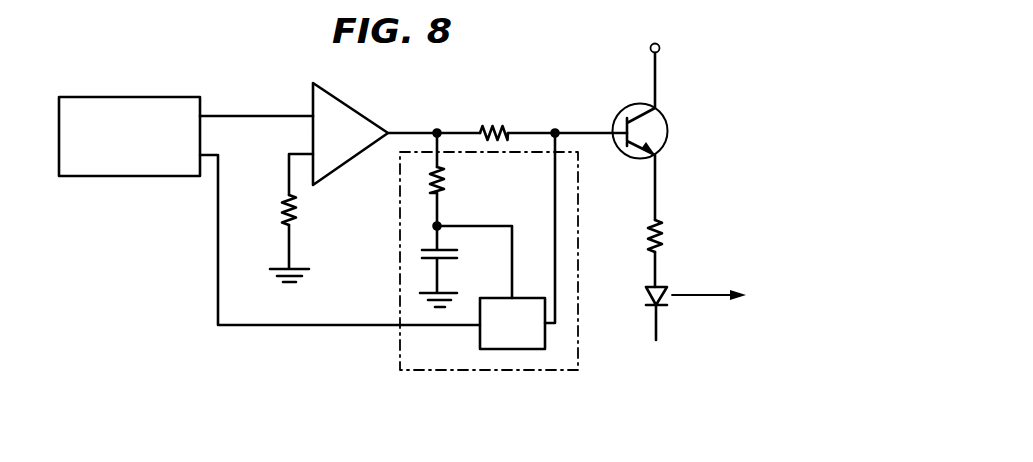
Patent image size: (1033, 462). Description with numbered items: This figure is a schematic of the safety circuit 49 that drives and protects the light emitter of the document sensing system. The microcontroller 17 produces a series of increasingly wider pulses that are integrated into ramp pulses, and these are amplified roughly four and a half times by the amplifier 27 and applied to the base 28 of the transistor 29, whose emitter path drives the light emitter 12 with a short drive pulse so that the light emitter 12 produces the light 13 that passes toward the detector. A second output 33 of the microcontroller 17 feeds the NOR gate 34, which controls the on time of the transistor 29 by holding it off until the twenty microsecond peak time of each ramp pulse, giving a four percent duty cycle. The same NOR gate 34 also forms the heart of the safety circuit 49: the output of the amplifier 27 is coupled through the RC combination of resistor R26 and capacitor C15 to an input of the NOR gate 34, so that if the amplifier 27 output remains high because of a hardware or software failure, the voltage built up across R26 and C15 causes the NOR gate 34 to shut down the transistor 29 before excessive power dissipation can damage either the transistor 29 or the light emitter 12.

The microcontroller 17 is at (128, 97).
The output 33 is at (214, 154).
The amplifier 27 is at (348, 104).
The safety circuit 49 is at (392, 346).
The resistor R26 is at (456, 181).
The capacitor C15 is at (466, 266).
The NOR gate 34 is at (547, 335).
The base 28 is at (615, 122).
The transistor 29 is at (658, 112).
The light emitter 12 is at (645, 295).
The emitted light 13 is at (724, 286).